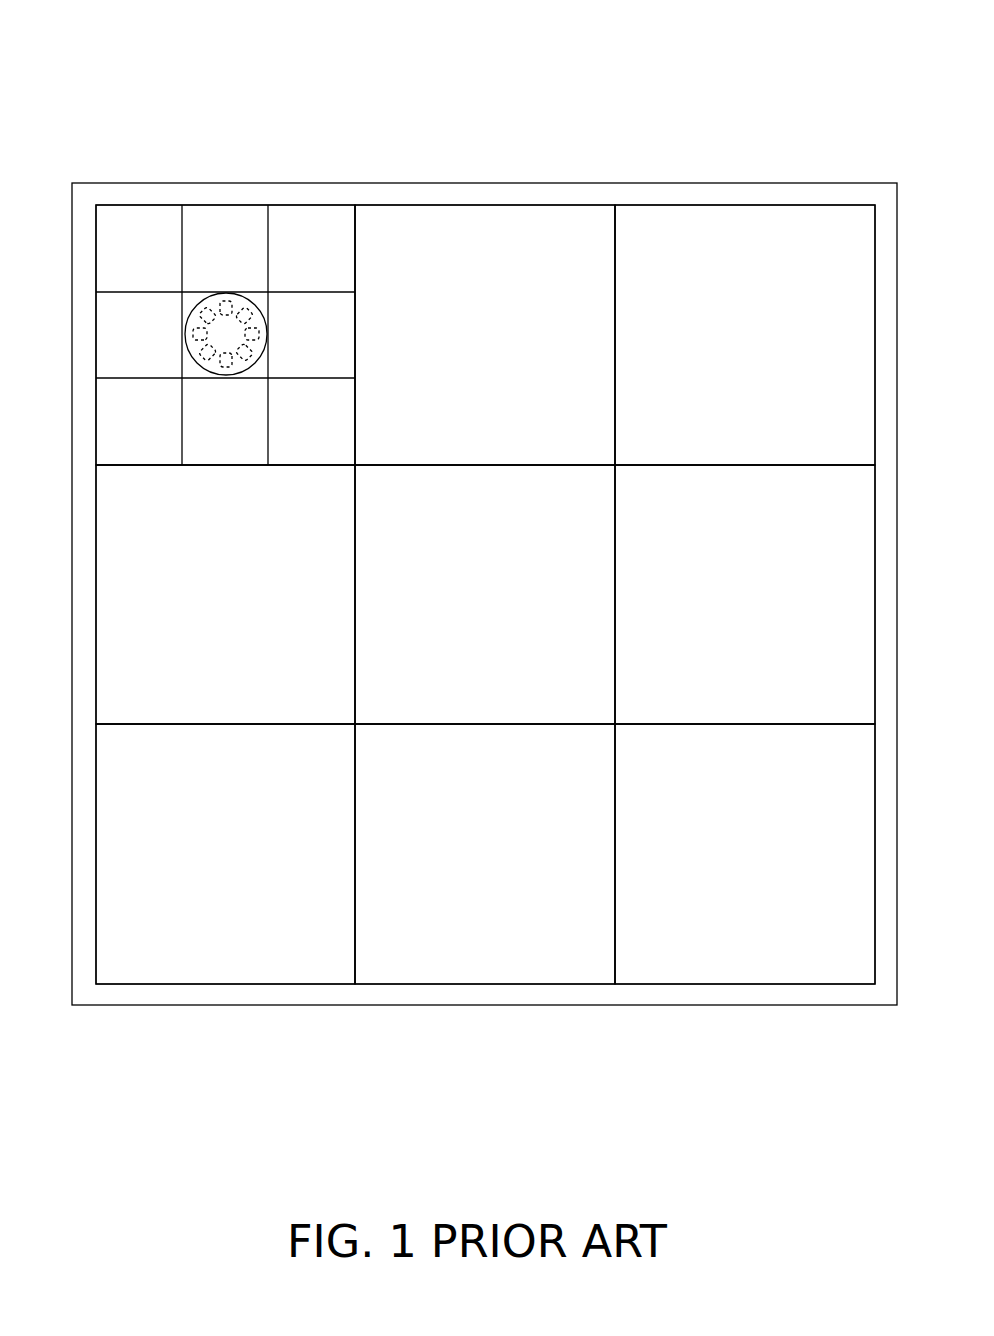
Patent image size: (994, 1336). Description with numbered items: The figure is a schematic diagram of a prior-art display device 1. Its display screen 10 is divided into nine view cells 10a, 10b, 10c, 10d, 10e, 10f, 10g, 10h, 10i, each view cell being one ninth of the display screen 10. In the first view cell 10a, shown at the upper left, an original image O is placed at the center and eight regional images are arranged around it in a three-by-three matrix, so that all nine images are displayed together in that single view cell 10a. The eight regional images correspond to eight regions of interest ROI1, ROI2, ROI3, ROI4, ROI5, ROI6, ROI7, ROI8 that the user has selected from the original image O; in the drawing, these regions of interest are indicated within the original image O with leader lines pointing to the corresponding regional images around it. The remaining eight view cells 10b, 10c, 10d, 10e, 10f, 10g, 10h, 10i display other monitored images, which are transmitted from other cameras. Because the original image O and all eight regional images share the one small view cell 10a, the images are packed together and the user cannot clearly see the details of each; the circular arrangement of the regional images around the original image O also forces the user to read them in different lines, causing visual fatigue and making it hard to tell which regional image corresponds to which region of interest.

The display device 1 is at (764, 76).
The display screen 10 is at (430, 194).
The view cell 10a is at (225, 220).
The view cell 10b is at (525, 243).
The view cell 10c is at (715, 243).
The view cell 10d is at (168, 703).
The view cell 10e is at (428, 703).
The view cell 10f is at (688, 703).
The view cell 10g is at (275, 963).
The view cell 10h is at (537, 962).
The view cell 10i is at (795, 962).
The original image O is at (187, 322).
The region of interest ROI1 is at (223, 303).
The region of interest ROI2 is at (249, 313).
The region of interest ROI3 is at (260, 330).
The region of interest ROI4 is at (247, 356).
The region of interest ROI5 is at (233, 373).
The region of interest ROI6 is at (203, 360).
The region of interest ROI7 is at (192, 338).
The region of interest ROI8 is at (200, 312).